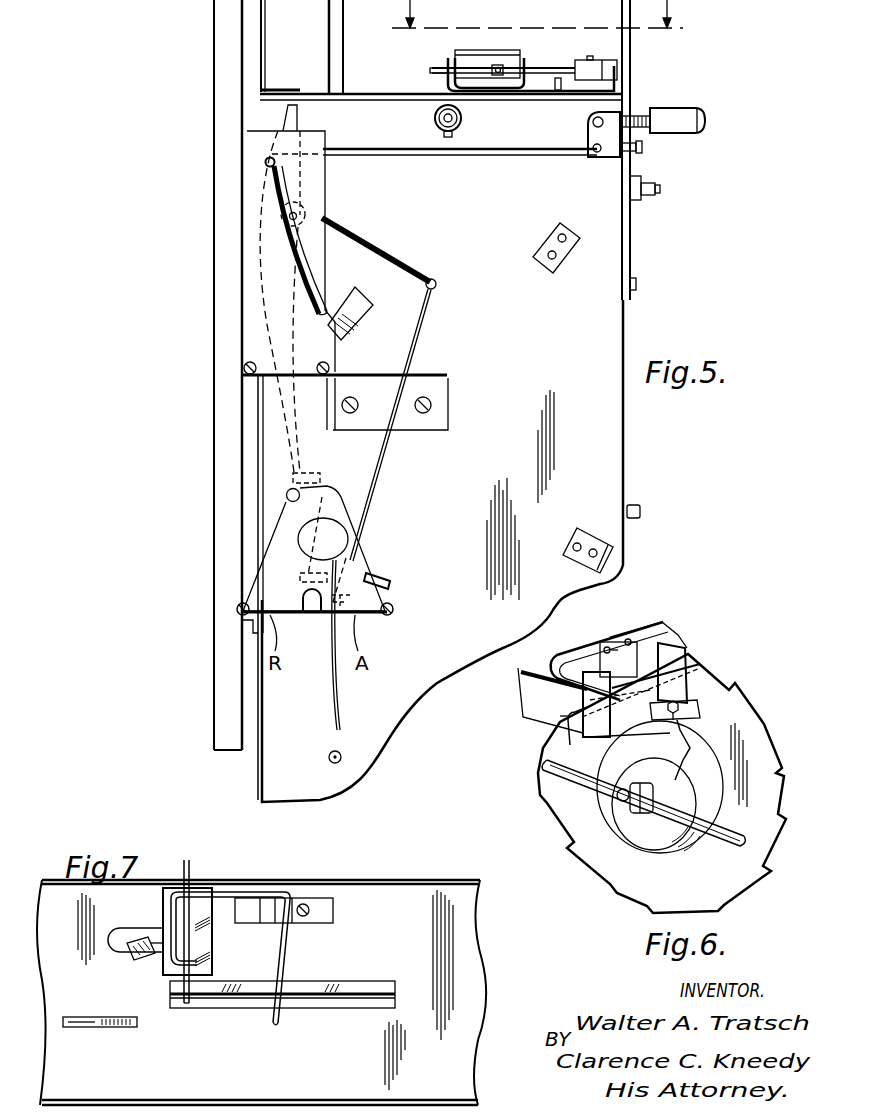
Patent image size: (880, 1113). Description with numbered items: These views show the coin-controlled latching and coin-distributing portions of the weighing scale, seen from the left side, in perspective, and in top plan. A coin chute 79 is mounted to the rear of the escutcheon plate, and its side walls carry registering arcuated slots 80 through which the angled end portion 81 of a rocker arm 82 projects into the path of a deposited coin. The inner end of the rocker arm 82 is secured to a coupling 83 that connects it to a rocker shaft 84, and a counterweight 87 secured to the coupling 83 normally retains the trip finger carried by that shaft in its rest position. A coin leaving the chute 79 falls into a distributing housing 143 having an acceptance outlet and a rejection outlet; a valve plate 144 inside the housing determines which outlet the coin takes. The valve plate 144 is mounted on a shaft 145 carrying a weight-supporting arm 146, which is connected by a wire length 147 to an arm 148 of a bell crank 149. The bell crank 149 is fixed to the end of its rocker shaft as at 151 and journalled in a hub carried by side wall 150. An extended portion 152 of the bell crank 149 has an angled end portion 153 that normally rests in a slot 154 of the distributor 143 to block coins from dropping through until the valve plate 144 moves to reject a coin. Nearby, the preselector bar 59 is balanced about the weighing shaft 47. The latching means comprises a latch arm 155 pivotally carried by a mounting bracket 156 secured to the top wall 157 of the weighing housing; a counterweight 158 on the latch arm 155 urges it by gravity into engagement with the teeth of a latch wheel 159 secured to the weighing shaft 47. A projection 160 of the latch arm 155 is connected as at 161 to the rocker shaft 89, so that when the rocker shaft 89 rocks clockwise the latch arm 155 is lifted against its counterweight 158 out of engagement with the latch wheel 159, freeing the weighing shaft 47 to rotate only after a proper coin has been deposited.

In FIG. 6, the weighing shaft 47 is at (588, 847).
In FIG. 5, the preselector bar 59 is at (347, 36).
In FIG. 5, the coin chute 79 is at (255, 247).
In FIG. 5, the arcuated slots 80 is at (280, 200).
In FIG. 5, the angled end portion 81 is at (266, 165).
In FIG. 5, the rocker arm 82 is at (476, 157).
In FIG. 5, the coupling 83 is at (610, 154).
In FIG. 5, the rocker shaft 84 is at (601, 119).
In FIG. 5, the counterweight 87 is at (683, 133).
In FIG. 5, the rocker shaft 89 is at (462, 118).
In FIG. 6, the rocker shaft 89 is at (675, 827).
In FIG. 5, the distributing housing 143 is at (292, 592).
In FIG. 5, the valve plate 144 is at (300, 532).
In FIG. 5, the shaft 145 is at (314, 563).
In FIG. 5, the weight-supporting arm 146 is at (383, 575).
In FIG. 5, the wire length 147 is at (373, 478).
In FIG. 5, the arm 148 is at (372, 254).
In FIG. 5, the bell crank 149 is at (345, 221).
In FIG. 5, the side wall 150 is at (540, 353).
In FIG. 5, the fixing point 151 is at (307, 218).
In FIG. 5, the extended portion 152 is at (273, 332).
In FIG. 5, the angled end portion 153 is at (293, 484).
In FIG. 5, the slot 154 is at (320, 470).
In FIG. 5, the latch arm 155 is at (552, 63).
In FIG. 6, the latch arm 155 is at (580, 655).
In FIG. 7, the latch arm 155 is at (282, 976).
In FIG. 5, the mounting bracket 156 is at (456, 54).
In FIG. 6, the mounting bracket 156 is at (680, 648).
In FIG. 7, the mounting bracket 156 is at (197, 887).
In FIG. 5, the top wall 157 is at (447, 63).
In FIG. 6, the top wall 157 is at (537, 708).
In FIG. 7, the top wall 157 is at (242, 887).
In FIG. 6, the counterweight 158 is at (622, 658).
In FIG. 7, the counterweight 158 is at (290, 945).
In FIG. 6, the latch wheel 159 is at (747, 708).
In FIG. 7, the latch wheel 159 is at (347, 996).
In FIG. 5, the projection 160 is at (496, 66).
In FIG. 6, the projection 160 is at (677, 718).
In FIG. 7, the projection 160 is at (149, 953).
In FIG. 6, the connection 161 is at (768, 776).